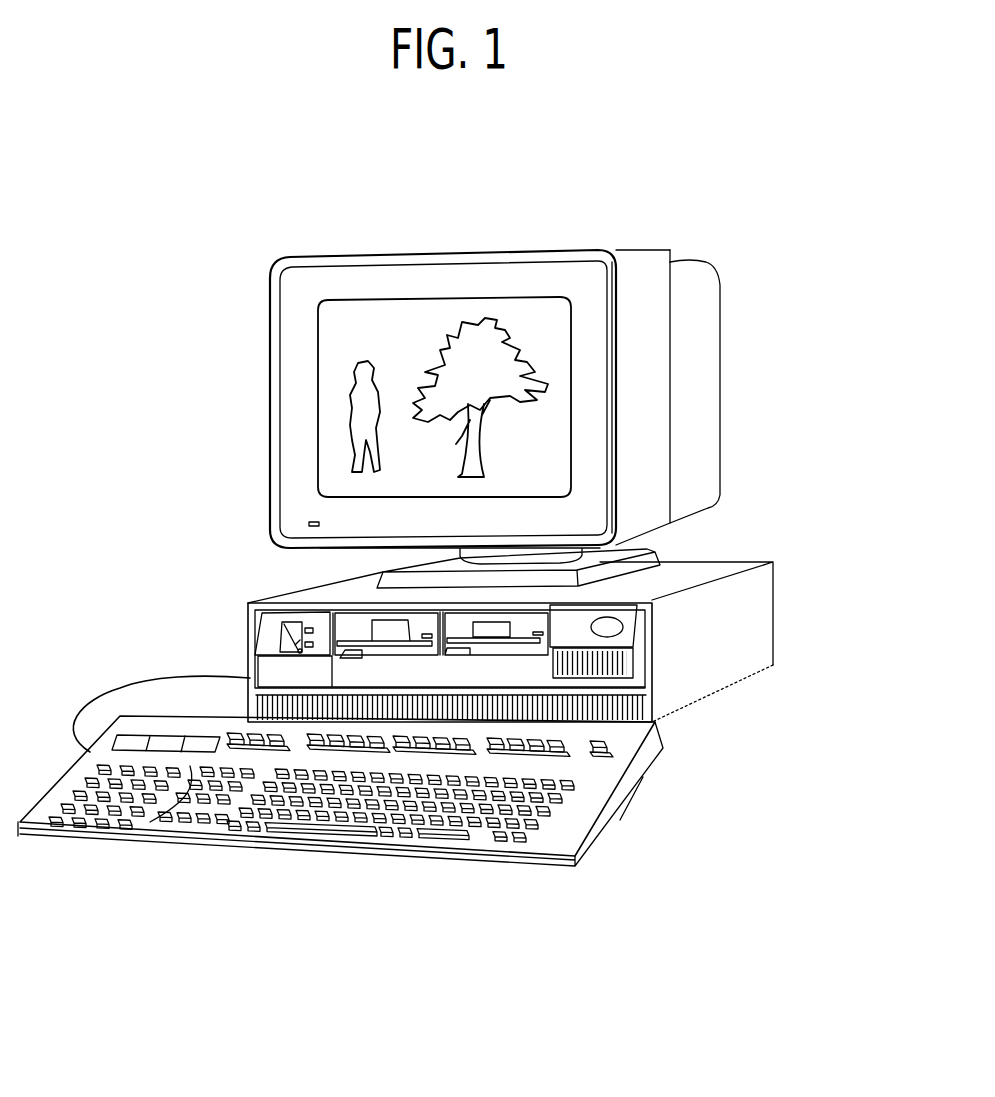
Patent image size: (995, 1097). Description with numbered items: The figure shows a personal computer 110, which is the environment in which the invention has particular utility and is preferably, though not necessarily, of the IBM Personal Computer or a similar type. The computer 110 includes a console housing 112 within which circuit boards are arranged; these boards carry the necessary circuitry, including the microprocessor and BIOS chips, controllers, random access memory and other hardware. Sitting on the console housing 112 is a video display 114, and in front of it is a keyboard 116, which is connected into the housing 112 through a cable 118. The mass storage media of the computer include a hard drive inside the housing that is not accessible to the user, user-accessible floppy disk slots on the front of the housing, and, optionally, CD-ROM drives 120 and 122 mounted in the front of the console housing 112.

The personal computer 110 is at (170, 444).
The console housing 112 is at (694, 657).
The video display 114 is at (720, 318).
The keyboard 116 is at (490, 868).
The cable 118 is at (135, 688).
The CD-ROM drive 120 is at (527, 626).
The CD-ROM drive 122 is at (392, 628).